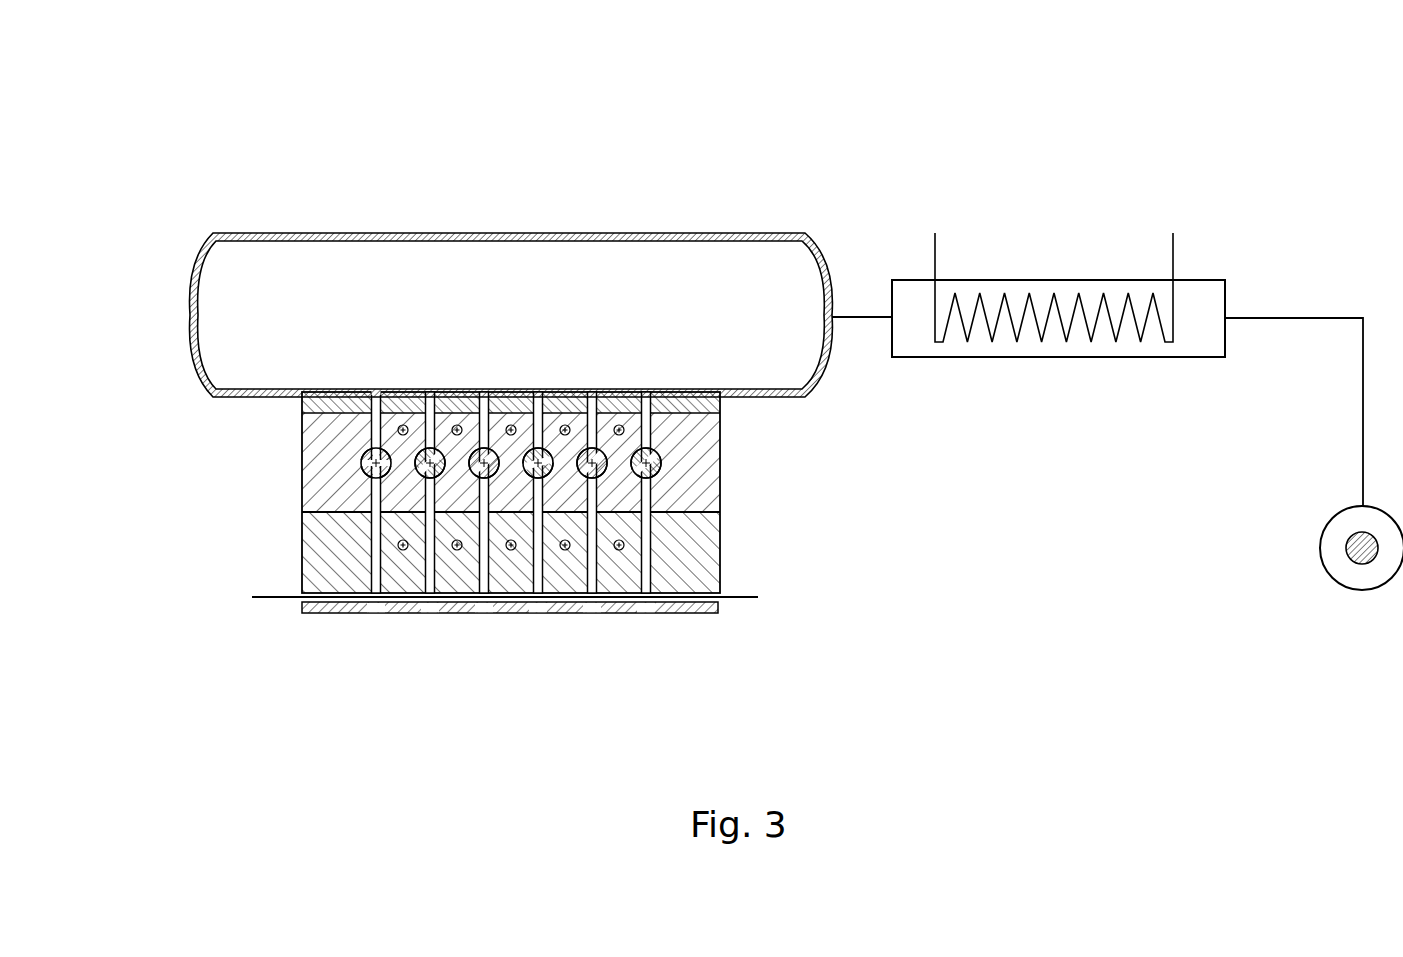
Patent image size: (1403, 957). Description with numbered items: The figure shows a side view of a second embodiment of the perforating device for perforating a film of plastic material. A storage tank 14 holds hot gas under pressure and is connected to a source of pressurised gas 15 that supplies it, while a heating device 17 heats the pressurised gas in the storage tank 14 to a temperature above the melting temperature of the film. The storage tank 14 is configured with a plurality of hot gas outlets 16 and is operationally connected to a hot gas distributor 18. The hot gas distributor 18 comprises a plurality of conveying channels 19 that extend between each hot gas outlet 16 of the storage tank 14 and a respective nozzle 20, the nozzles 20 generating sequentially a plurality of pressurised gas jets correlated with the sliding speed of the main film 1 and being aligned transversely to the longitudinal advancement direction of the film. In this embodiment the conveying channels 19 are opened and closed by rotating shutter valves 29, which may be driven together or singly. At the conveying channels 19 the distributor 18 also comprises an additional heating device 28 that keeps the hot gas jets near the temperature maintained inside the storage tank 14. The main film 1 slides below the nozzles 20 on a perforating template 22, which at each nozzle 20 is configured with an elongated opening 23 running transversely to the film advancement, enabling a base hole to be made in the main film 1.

The main film 1 is at (253, 597).
The storage tank 14 is at (240, 257).
The source of pressurised gas 15 is at (1332, 535).
The hot gas outlets 16 is at (376, 392).
The heating device 17 is at (1203, 287).
The hot gas distributor 18 is at (278, 471).
The conveying channels 19 is at (377, 430).
The nozzles 20 is at (590, 615).
The perforating template 22 is at (312, 615).
The elongated opening 23 is at (423, 615).
The additional heating device 28 is at (623, 545).
The shutter valves 29 is at (660, 458).